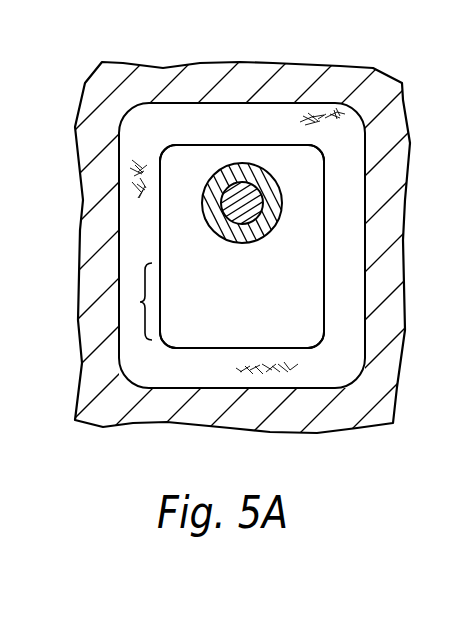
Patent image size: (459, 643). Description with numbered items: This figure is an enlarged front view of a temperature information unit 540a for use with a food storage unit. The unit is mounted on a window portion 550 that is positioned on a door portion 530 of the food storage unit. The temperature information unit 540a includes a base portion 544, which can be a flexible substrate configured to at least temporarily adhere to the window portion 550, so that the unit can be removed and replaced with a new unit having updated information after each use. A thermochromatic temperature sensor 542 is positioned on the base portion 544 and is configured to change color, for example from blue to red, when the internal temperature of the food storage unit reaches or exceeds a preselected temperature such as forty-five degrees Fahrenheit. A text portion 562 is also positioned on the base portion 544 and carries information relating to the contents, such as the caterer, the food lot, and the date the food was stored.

The door portion 530 is at (130, 428).
The window portion 550 is at (278, 120).
The temperature information unit 540a is at (158, 168).
The base portion 544 is at (203, 160).
The thermochromatic temperature sensor 542 is at (202, 203).
The text portion 562 is at (140, 302).